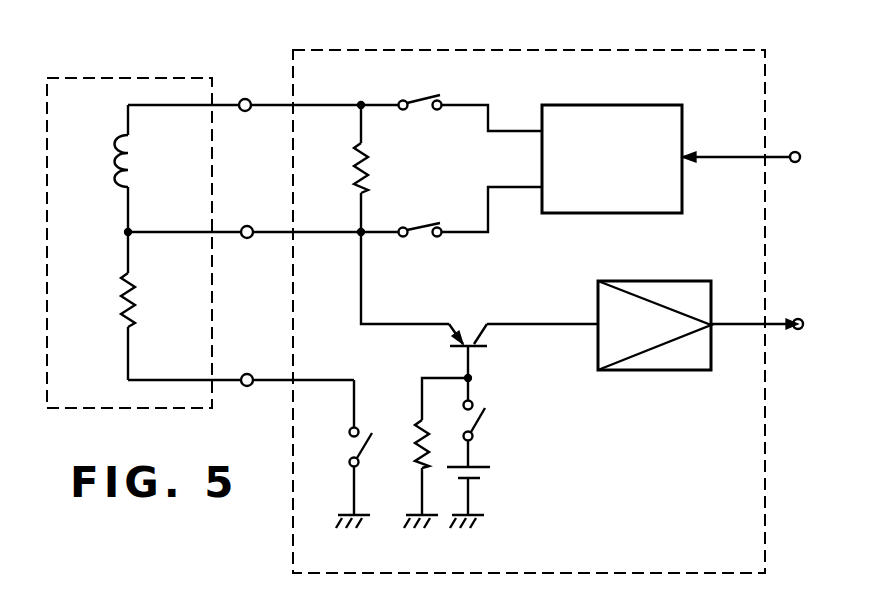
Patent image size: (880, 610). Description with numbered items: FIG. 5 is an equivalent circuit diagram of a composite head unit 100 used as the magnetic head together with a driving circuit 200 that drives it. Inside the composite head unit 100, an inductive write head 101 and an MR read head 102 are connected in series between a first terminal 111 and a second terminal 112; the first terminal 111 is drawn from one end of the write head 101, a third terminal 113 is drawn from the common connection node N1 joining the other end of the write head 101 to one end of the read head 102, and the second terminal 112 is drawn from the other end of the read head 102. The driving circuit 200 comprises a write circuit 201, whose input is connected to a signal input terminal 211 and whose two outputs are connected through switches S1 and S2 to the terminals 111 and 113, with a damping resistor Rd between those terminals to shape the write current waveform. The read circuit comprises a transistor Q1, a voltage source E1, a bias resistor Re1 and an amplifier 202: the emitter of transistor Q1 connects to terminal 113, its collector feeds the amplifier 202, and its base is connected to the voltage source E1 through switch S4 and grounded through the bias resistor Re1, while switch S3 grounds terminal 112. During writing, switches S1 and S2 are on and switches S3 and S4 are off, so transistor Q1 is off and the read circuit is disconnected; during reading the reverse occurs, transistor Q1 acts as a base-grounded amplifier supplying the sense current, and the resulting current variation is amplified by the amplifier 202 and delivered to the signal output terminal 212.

The composite head unit 100 is at (130, 78).
The inductive write head 101 is at (138, 142).
The MR read head 102 is at (118, 300).
The common connection node N1 is at (126, 234).
The first terminal 111 is at (244, 98).
The second terminal 112 is at (247, 373).
The third terminal 113 is at (247, 225).
The driving circuit 200 is at (612, 50).
The write circuit 201 is at (572, 105).
The amplifier 202 is at (641, 370).
The signal input terminal 211 is at (795, 151).
The signal output terminal 212 is at (800, 318).
The switch S1 is at (451, 95).
The switch S2 is at (437, 226).
The switch S3 is at (350, 452).
The switch S4 is at (482, 420).
The damping resistor Rd is at (372, 170).
The bias resistor Re1 is at (414, 428).
The transistor Q1 is at (470, 328).
The voltage source E1 is at (492, 474).